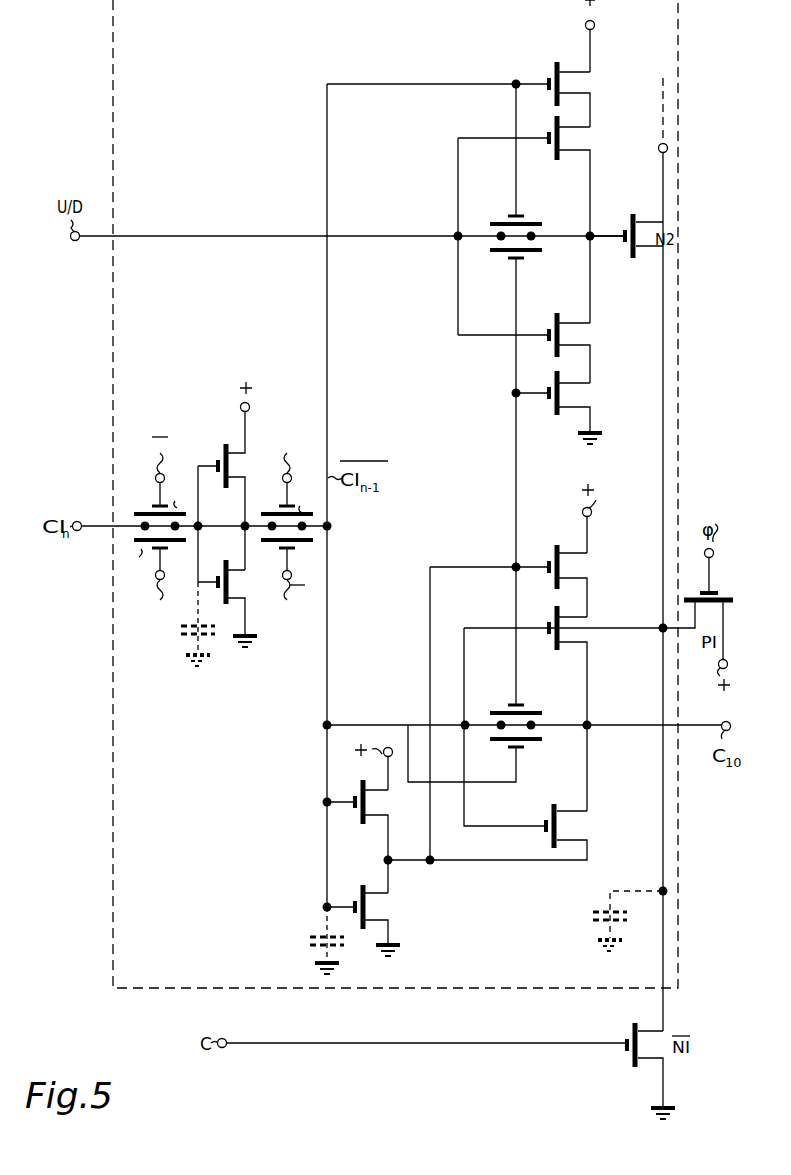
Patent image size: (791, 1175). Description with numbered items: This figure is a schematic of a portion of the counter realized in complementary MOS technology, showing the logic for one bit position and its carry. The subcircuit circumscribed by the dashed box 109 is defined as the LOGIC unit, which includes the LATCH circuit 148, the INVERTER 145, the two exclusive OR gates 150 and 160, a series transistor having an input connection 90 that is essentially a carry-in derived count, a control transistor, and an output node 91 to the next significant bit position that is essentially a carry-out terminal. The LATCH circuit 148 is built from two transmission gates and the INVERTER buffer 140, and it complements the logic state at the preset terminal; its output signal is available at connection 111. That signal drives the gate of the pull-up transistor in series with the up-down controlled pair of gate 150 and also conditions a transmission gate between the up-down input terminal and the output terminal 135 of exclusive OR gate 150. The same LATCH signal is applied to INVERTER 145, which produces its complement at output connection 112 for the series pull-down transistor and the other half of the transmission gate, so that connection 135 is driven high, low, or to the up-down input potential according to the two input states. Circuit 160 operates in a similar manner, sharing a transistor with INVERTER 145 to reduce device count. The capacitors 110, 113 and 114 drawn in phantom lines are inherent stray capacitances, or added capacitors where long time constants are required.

The box 109 is at (113, 434).
The capacitor 110 is at (181, 632).
The connection 111 is at (331, 527).
The output connection 112 is at (432, 865).
The capacitor 113 is at (309, 941).
The capacitor 114 is at (591, 918).
The output terminal 135 is at (623, 187).
The INVERTER circuit 140 is at (237, 536).
The INVERTER circuit 145 is at (305, 890).
The LATCH circuit 148 is at (224, 368).
The exclusive OR gate 150 is at (499, 309).
The exclusive OR gate 160 is at (499, 612).
The input connection 90 is at (659, 632).
The output node 91 is at (659, 148).